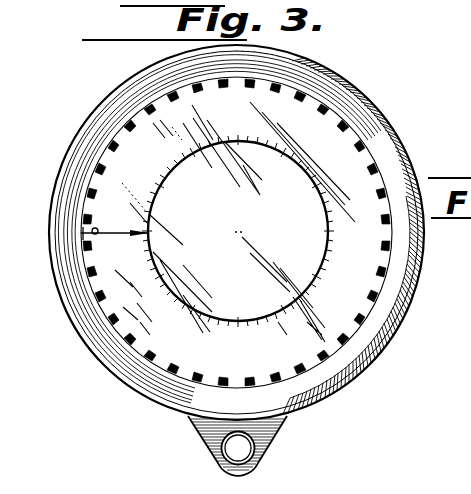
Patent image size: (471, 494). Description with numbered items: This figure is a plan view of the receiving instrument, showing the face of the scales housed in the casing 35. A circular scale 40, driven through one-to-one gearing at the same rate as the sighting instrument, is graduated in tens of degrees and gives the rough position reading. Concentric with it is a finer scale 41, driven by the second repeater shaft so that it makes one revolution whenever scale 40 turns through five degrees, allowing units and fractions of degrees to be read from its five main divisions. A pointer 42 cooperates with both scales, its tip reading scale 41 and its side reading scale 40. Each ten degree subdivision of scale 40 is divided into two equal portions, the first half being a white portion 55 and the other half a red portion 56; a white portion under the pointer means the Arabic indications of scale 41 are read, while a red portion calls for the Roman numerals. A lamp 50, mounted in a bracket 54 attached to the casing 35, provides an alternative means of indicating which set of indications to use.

The casing 35 is at (426, 257).
The circular scale 40 is at (236, 232).
The scale 41 is at (238, 231).
The pointer 42 is at (114, 237).
The lamp 50 is at (230, 454).
The bracket 54 is at (277, 431).
The white portion 55 is at (391, 212).
The red portion 56 is at (235, 222).